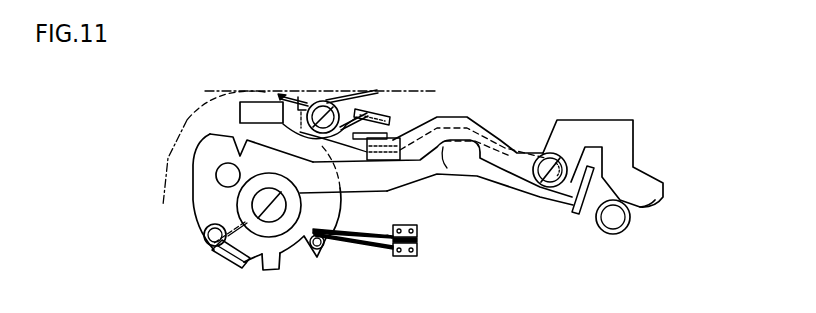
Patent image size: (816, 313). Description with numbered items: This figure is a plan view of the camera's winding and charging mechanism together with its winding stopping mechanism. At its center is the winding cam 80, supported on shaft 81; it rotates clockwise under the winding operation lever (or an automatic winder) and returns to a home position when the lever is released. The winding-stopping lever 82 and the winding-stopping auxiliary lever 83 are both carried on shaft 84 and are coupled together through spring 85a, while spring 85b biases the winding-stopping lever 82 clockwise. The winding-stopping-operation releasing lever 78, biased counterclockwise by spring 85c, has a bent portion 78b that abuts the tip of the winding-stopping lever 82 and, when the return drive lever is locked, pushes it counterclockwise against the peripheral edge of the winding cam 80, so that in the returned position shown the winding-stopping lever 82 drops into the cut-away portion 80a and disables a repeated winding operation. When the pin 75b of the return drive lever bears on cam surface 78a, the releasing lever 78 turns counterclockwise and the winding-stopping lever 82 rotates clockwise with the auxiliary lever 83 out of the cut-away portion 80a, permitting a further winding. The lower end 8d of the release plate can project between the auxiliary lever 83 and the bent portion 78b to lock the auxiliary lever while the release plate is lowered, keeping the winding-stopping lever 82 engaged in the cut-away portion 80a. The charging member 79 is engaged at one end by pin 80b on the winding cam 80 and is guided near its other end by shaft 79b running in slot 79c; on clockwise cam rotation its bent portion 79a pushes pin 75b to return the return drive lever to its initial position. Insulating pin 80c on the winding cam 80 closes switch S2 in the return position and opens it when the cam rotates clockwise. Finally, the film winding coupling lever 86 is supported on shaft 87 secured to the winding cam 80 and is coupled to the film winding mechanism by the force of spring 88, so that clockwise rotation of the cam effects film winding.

The pin 75b is at (624, 219).
The winding-stopping-operation releasing lever 78 is at (621, 130).
The cam surface 78a is at (648, 203).
The bent portion 78b is at (222, 135).
The charging member 79 is at (396, 185).
The bent portion 79a is at (578, 215).
The shaft 79b is at (553, 187).
The slot 79c is at (457, 157).
The winding cam 80 is at (200, 188).
The cut-away portion 80a is at (190, 133).
The pin 80b is at (219, 168).
The insulating pin 80c is at (320, 258).
The shaft 81 is at (252, 203).
The winding-stopping lever 82 is at (243, 104).
The winding-stopping auxiliary lever 83 is at (363, 117).
The shaft 84 is at (303, 100).
The spring 85a is at (326, 102).
The spring 85b is at (328, 97).
The spring 85c is at (277, 97).
The film winding coupling lever 86 is at (218, 263).
The shaft 87 is at (205, 240).
The spring 88 is at (262, 268).
The lower end of release plate 8d is at (380, 119).
The switch S2 is at (419, 242).